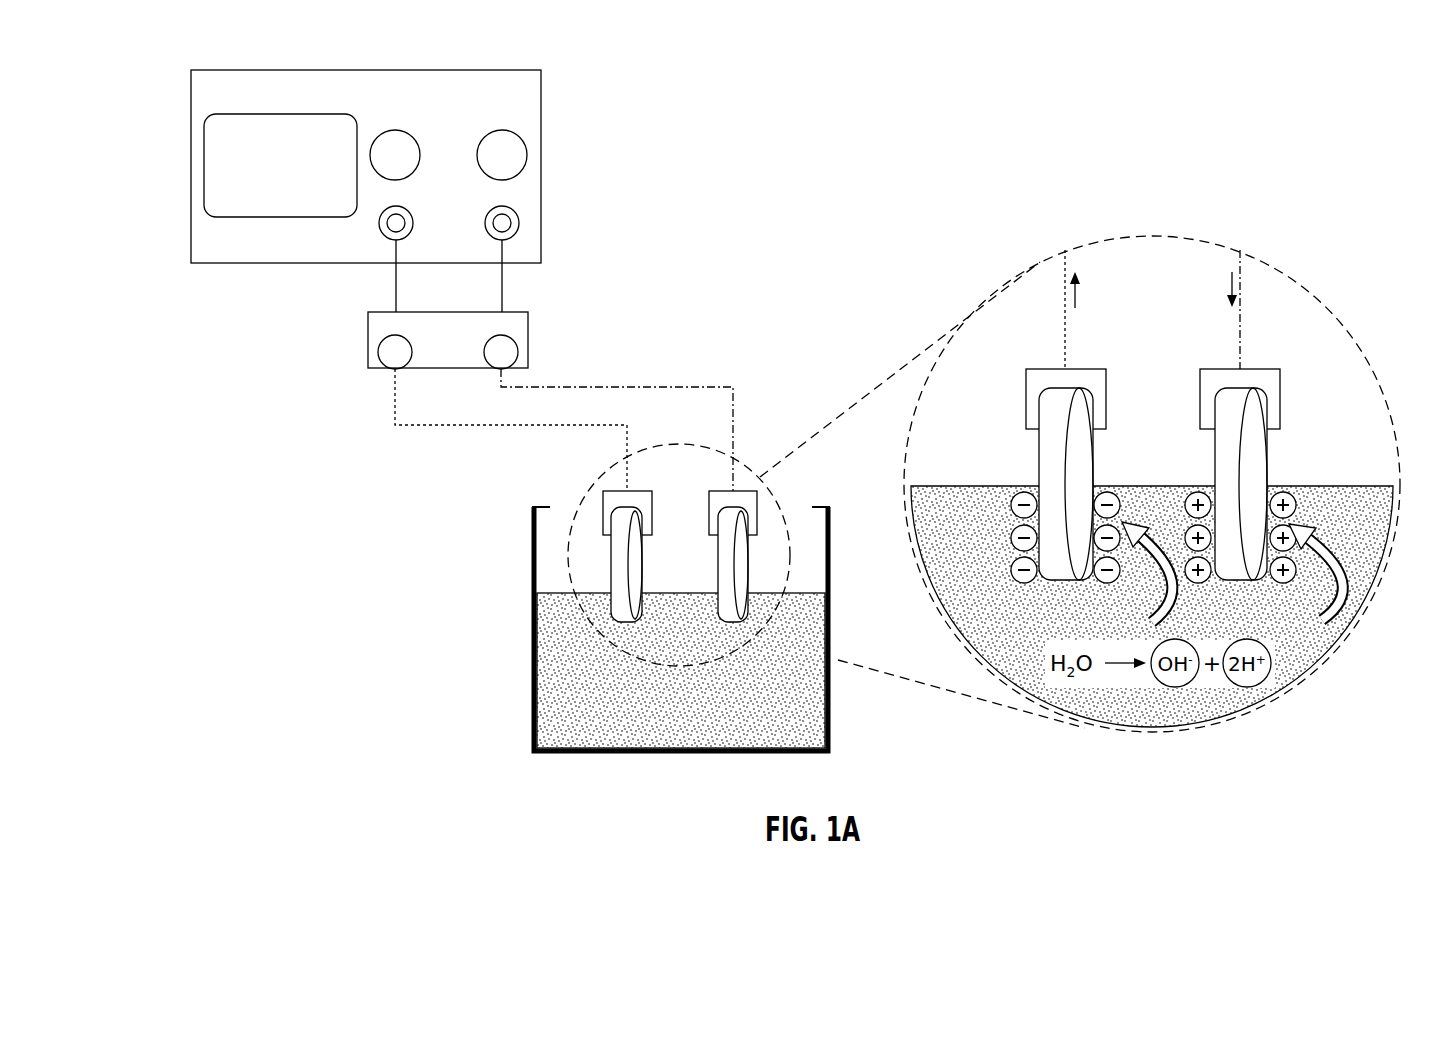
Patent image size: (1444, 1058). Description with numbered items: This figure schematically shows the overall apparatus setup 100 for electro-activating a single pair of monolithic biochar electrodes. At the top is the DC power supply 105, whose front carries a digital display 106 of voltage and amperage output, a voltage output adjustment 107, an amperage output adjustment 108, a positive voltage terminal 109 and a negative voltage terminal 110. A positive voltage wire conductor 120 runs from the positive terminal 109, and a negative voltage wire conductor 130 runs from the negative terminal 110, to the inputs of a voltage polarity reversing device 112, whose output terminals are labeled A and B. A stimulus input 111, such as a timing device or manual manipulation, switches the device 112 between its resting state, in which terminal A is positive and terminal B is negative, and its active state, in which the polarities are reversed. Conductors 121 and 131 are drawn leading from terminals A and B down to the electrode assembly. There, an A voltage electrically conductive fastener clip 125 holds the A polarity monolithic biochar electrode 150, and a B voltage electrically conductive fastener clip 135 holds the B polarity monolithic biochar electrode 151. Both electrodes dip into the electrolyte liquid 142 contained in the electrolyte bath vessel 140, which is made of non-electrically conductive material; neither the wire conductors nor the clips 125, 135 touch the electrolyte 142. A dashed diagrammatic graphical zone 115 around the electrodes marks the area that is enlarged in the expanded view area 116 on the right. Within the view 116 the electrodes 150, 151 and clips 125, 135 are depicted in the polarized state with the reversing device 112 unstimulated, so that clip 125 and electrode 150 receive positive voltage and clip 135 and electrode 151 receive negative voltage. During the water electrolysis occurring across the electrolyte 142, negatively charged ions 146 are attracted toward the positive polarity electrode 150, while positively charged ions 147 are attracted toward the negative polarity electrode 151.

The overall apparatus setup 100 is at (913, 162).
The DC power supply 105 is at (541, 165).
The digital display 106 is at (214, 165).
The voltage output adjustment 107 is at (395, 128).
The amperage output adjustment 108 is at (502, 128).
The positive voltage terminal 109 is at (380, 226).
The negative voltage terminal 110 is at (519, 222).
The stimulus input 111 is at (534, 331).
The voltage polarity reversing device 112 is at (368, 330).
The diagrammatic graphical zone 115 is at (790, 547).
The expanded view area 116 is at (1313, 298).
The positive voltage wire conductor 120 is at (395, 285).
The first conductor 121 is at (428, 426).
The A voltage electrically conductive fastener clip 125 is at (612, 502).
The negative voltage wire conductor 130 is at (502, 285).
The second conductor 131 is at (670, 387).
The B voltage electrically conductive fastener clip 135 is at (748, 500).
The electrolyte bath vessel 140 is at (532, 675).
The electrolyte liquid 142 is at (815, 715).
The negatively charged ions 146 is at (1014, 538).
The positively charged ions 147 is at (1302, 535).
The A polarity monolithic biochar electrode 150 is at (610, 565).
The B polarity monolithic biochar electrode 151 is at (742, 555).